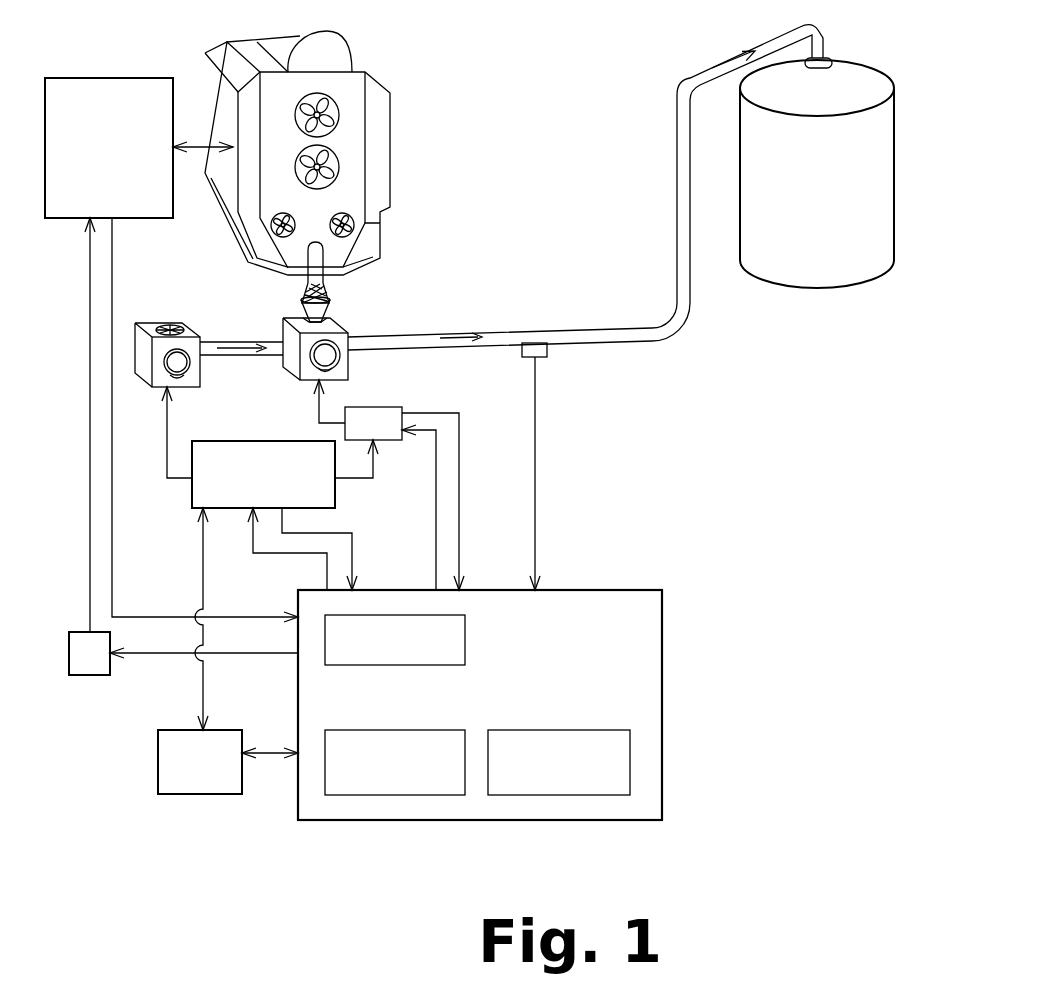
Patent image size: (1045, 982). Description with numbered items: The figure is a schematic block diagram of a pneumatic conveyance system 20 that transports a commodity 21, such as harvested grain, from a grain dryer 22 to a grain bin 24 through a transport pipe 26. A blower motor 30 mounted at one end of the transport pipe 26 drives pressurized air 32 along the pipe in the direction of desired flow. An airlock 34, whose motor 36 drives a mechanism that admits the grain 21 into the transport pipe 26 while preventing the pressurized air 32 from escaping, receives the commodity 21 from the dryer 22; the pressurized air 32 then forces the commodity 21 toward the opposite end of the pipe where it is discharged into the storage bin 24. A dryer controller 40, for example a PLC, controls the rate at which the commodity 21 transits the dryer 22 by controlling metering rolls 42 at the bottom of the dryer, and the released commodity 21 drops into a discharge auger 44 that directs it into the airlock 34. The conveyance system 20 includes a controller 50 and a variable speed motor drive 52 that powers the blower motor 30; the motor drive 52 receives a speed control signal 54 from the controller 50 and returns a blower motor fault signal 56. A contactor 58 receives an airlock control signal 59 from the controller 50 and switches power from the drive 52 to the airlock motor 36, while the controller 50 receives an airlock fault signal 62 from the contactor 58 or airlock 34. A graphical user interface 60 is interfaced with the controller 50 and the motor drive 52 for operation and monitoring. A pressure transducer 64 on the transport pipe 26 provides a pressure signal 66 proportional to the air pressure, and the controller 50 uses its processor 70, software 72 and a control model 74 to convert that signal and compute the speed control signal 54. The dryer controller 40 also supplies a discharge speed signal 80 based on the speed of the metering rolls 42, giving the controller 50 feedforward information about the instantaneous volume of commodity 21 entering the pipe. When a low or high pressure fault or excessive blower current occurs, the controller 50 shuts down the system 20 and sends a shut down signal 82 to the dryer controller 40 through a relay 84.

The pneumatic conveyance system 20 is at (816, 471).
The commodity 21 is at (325, 293).
The grain dryer 22 is at (383, 76).
The grain bin 24 is at (884, 74).
The transport pipe 26 is at (677, 155).
The blower motor 30 is at (155, 323).
The pressurized air 32 is at (238, 341).
The airlock 34 is at (295, 378).
The airlock motor 36 is at (349, 330).
The dryer controller 40 is at (90, 78).
The metering rolls 42 is at (294, 217).
The discharge auger 44 is at (325, 245).
The controller 50 is at (663, 675).
The variable speed motor drive 52 is at (190, 492).
The speed control signal 54 is at (273, 555).
The blower motor fault signal 56 is at (355, 548).
The contactor 58 is at (385, 407).
The airlock control signal 59 is at (428, 473).
The graphical user interface 60 is at (158, 765).
The airlock fault signal 62 is at (461, 490).
The pressure transducer 64 is at (548, 352).
The pressure signal 66 is at (536, 467).
The processor 70 is at (467, 633).
The software 72 is at (631, 762).
The control model 74 is at (374, 797).
The discharge speed signal 80 is at (113, 232).
The shut down signal 82 is at (90, 292).
The relay 84 is at (88, 677).